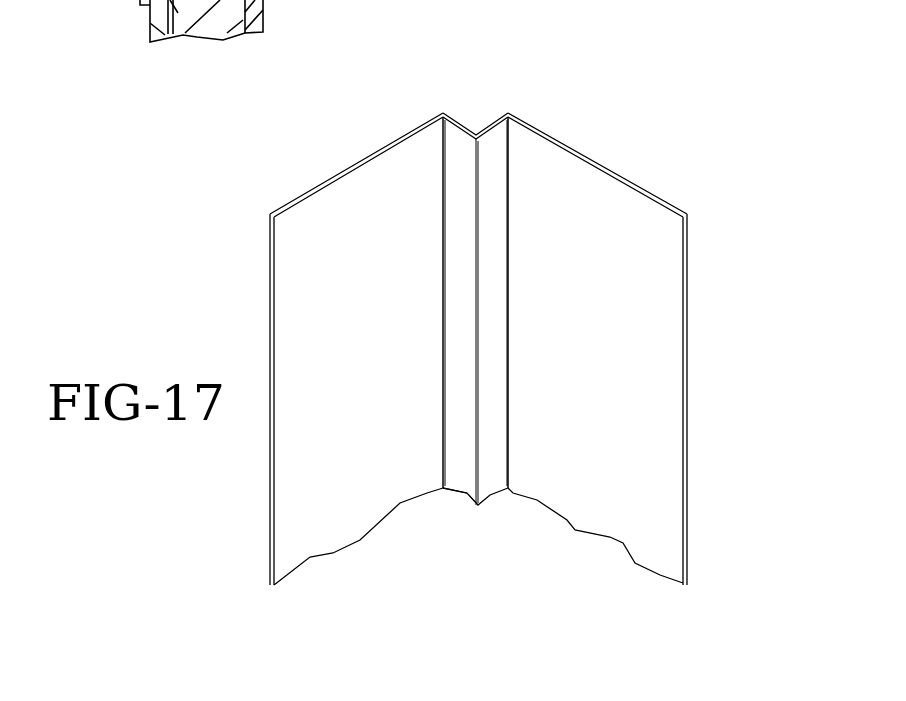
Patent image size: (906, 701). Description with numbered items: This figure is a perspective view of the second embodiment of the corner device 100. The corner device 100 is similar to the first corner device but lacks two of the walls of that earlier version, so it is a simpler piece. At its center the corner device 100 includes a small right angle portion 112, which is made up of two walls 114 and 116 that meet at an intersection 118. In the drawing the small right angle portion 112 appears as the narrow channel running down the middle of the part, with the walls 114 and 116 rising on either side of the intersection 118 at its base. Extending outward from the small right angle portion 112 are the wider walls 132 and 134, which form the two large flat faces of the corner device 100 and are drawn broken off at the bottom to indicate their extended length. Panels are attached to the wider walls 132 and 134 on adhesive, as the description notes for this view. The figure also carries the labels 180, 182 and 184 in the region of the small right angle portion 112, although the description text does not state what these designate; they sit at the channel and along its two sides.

The corner device 100 is at (475, 299).
The small right angle portion 112 is at (547, 292).
The wall 114 is at (491, 195).
The wall 116 is at (463, 195).
The intersection 118 is at (452, 501).
The wider wall 132 is at (646, 272).
The wider wall 134 is at (310, 272).
The channel 180 is at (476, 95).
The first flange 182 is at (510, 262).
The second flange 184 is at (445, 285).